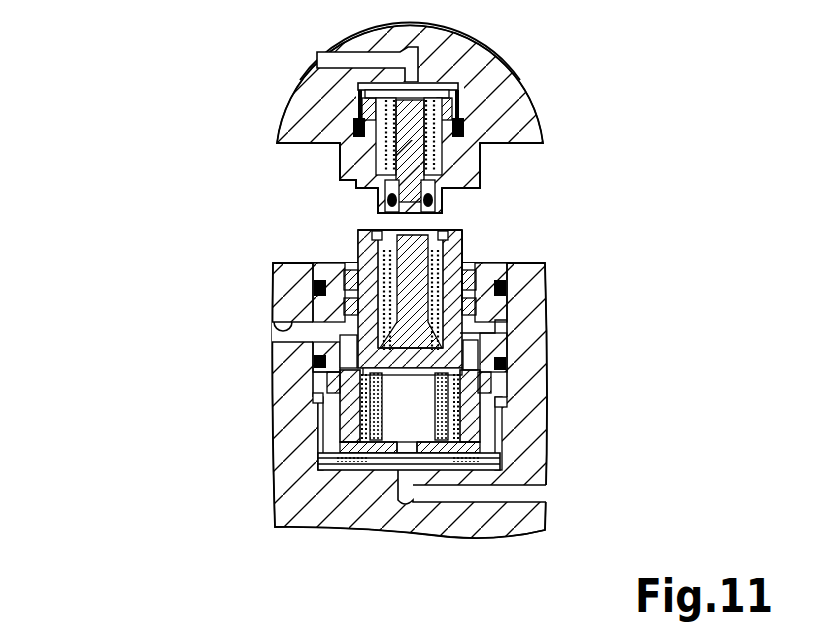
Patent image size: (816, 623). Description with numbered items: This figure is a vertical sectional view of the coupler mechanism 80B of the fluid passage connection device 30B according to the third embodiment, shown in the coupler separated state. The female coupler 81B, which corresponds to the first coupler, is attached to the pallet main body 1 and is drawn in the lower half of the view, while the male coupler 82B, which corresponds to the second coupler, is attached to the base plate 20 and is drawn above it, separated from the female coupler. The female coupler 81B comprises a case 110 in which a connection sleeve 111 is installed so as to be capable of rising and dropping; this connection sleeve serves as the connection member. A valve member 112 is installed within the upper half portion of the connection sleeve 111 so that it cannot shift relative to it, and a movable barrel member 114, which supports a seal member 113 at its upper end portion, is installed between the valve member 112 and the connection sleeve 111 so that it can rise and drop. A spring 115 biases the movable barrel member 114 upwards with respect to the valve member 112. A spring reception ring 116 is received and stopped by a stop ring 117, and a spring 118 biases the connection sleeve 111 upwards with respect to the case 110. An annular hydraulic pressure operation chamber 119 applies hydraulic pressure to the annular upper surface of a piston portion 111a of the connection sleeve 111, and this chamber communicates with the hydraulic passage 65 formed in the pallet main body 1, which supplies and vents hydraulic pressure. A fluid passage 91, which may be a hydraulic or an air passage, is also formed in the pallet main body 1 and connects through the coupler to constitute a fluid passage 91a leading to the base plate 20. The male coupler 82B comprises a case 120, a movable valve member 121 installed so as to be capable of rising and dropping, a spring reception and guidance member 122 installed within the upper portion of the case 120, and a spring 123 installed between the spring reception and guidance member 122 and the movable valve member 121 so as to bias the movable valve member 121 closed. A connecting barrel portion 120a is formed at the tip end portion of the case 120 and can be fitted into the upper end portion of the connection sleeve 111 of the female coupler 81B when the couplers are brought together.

The pallet main body 1 is at (285, 455).
The base plate 20 is at (292, 121).
The fluid passage connection device 30B is at (127, 449).
The hydraulic passage 65 is at (270, 324).
The coupler mechanism 80B is at (221, 339).
The female coupler 81B is at (290, 494).
The male coupler 82B is at (331, 197).
The fluid passage 91 is at (500, 494).
The fluid passage 91a is at (314, 58).
The case 110 is at (466, 346).
The connection sleeve 111 is at (495, 372).
The piston portion 111a is at (482, 400).
The valve member 112 is at (478, 280).
The seal member 113 is at (452, 228).
The movable barrel member 114 is at (462, 252).
The spring 115 is at (488, 348).
The spring reception ring 116 is at (490, 446).
The stop ring 117 is at (492, 462).
The spring 118 is at (377, 457).
The hydraulic pressure operation chamber 119 is at (310, 402).
The case 120 is at (495, 128).
The connecting barrel portion 120a is at (456, 206).
The movable valve member 121 is at (462, 90).
The spring reception and guidance member 122 is at (472, 37).
The spring 123 is at (342, 170).